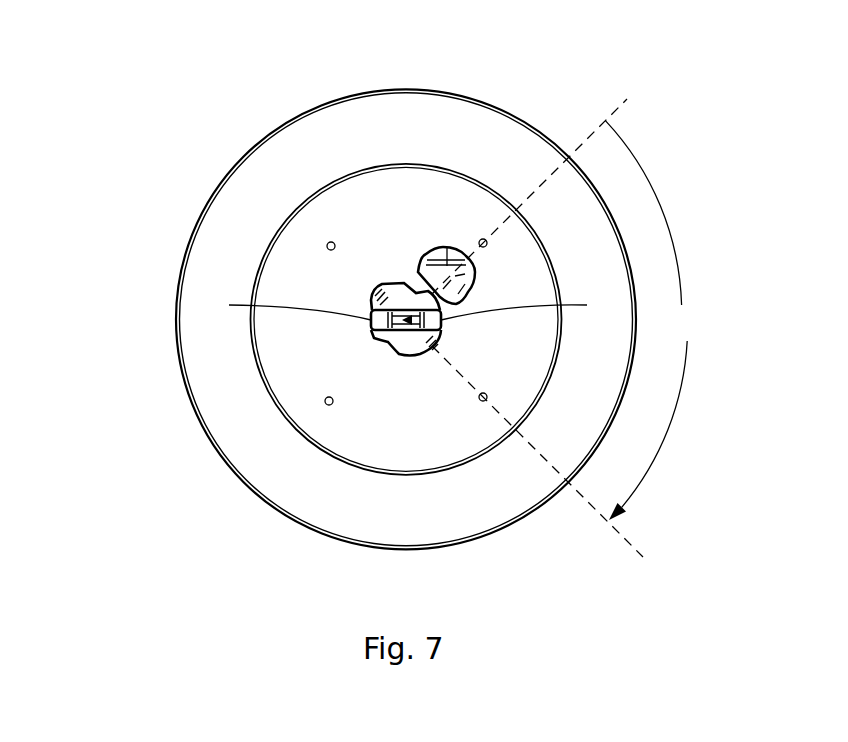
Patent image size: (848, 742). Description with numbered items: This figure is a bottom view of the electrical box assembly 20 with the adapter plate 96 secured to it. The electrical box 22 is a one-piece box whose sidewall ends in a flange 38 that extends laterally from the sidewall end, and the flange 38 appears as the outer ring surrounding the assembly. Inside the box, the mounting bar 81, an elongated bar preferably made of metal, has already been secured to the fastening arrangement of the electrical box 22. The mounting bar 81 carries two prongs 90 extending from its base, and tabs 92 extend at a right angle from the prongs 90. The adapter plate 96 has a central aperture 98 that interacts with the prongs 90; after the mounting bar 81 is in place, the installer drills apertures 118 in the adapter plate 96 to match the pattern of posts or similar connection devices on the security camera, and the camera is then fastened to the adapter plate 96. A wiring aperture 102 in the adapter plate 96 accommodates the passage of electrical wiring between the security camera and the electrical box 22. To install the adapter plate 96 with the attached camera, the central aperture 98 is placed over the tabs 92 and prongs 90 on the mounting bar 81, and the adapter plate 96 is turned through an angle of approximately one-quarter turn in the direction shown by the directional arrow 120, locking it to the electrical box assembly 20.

The electrical box assembly 20 is at (140, 128).
The electrical box 22 is at (548, 137).
The flange 38 is at (416, 145).
The adapter plate 96 is at (402, 221).
The mounting bar 81 is at (407, 311).
The apertures 118 is at (327, 244).
The tabs 92 is at (406, 306).
The prongs 90 is at (386, 340).
The central aperture 98 is at (401, 345).
The wiring aperture 102 is at (445, 252).
The directional arrow 120 is at (685, 377).